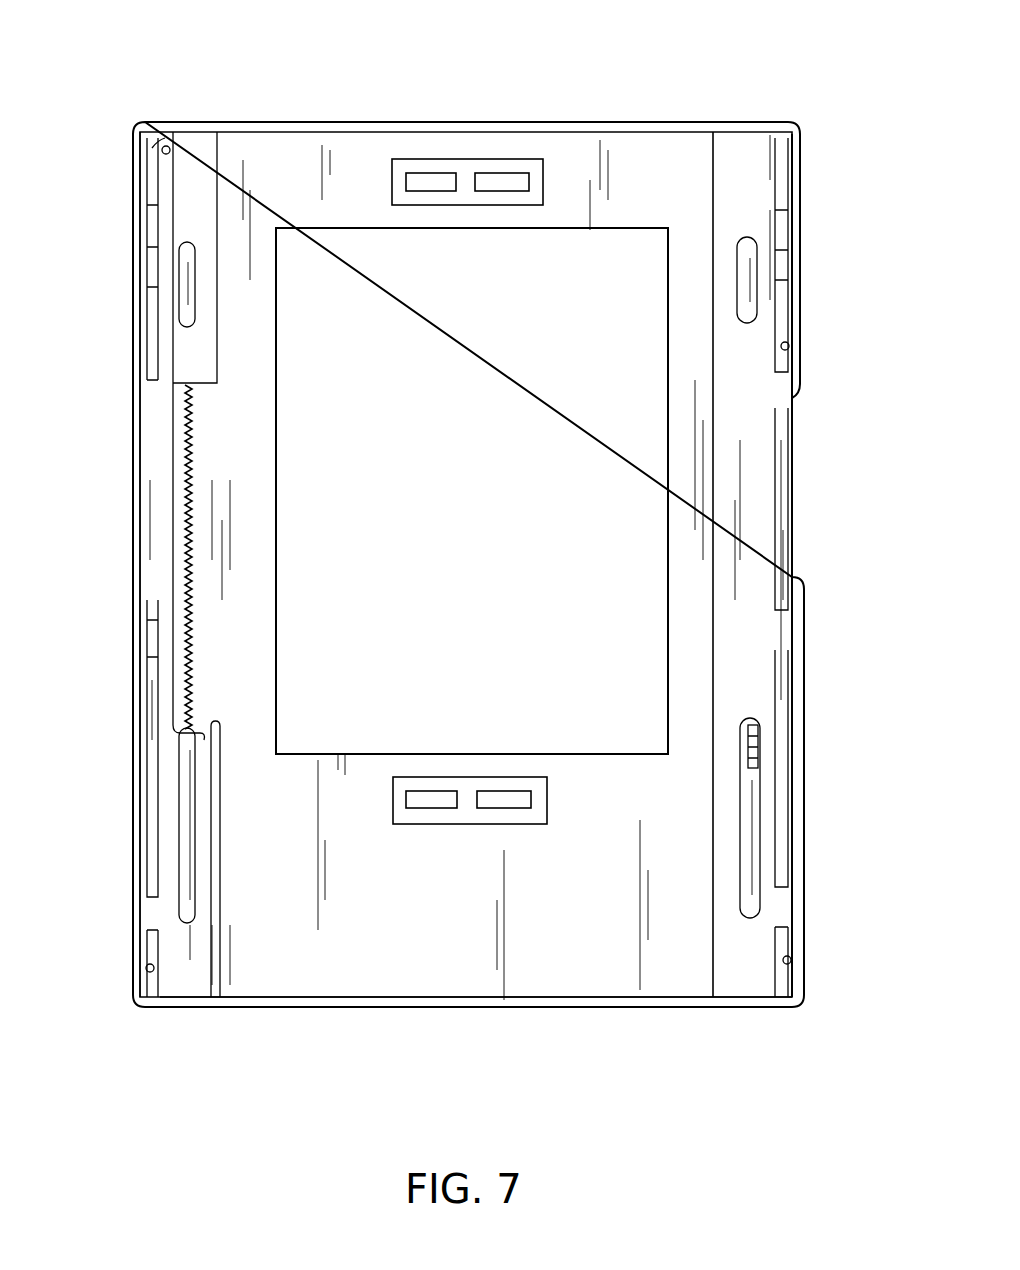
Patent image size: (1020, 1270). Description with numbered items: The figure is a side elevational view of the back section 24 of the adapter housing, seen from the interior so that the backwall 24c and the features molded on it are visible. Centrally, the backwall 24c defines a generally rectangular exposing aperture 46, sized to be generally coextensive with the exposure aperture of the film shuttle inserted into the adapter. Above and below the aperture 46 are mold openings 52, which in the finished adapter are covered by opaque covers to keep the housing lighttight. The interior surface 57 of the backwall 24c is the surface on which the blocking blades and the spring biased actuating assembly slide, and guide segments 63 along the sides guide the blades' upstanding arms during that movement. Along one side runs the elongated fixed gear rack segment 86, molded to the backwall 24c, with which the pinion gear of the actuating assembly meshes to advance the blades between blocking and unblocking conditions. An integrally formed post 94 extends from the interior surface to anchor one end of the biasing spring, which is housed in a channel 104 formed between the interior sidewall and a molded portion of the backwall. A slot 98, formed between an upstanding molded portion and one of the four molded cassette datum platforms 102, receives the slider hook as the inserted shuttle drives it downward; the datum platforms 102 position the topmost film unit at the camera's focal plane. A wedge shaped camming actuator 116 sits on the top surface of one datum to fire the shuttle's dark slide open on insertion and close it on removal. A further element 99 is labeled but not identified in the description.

The back section 24 is at (802, 112).
The backwall 24c is at (555, 962).
The exposing aperture 46 is at (278, 362).
The mold openings 52 is at (516, 182).
The interior surface 57 is at (352, 772).
The guide segments 63 is at (712, 262).
The elongated fixed gear rack segment 86 is at (192, 470).
The post 94 is at (178, 148).
The slot 98 is at (204, 740).
The guide bar 99 is at (220, 795).
The molded cassette datum platforms 102 is at (183, 303).
The channel 104 is at (167, 185).
The camming actuator 116 is at (758, 740).